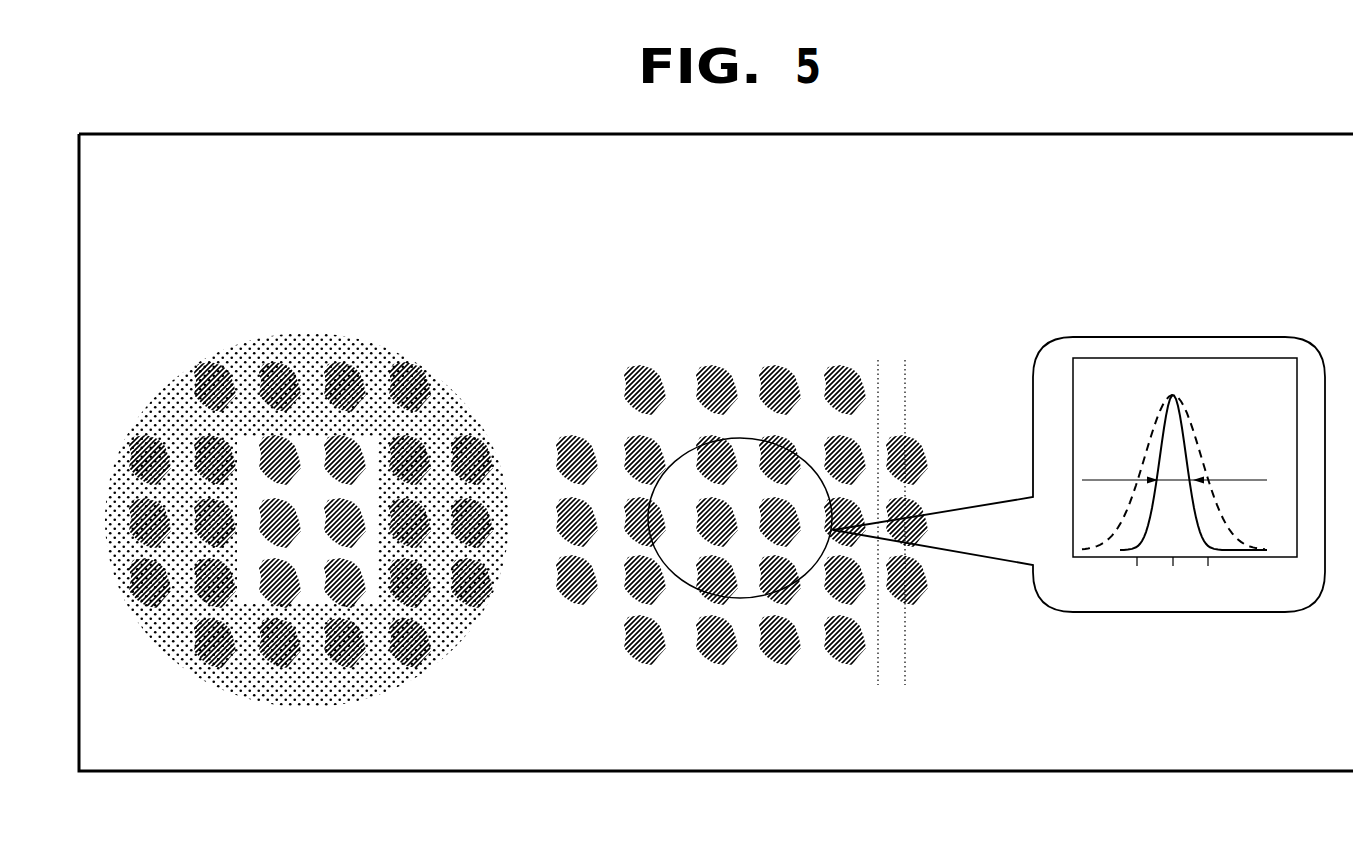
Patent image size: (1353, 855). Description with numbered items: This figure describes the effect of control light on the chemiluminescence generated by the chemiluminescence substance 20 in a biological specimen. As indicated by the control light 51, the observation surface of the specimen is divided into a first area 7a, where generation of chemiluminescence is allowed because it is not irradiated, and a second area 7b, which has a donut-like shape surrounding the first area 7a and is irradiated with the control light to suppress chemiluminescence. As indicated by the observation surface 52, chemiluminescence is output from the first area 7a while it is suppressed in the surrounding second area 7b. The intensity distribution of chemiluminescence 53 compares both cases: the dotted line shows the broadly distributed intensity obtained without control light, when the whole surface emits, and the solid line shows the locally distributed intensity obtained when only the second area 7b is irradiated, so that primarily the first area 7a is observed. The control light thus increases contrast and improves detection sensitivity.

The control light 51 is at (205, 304).
The observation surface 52 is at (632, 304).
The intensity distribution of chemiluminescence 53 is at (1052, 304).
The chemiluminescence substance 20 is at (350, 517).
The first area 7a is at (380, 502).
The second area 7b is at (447, 620).